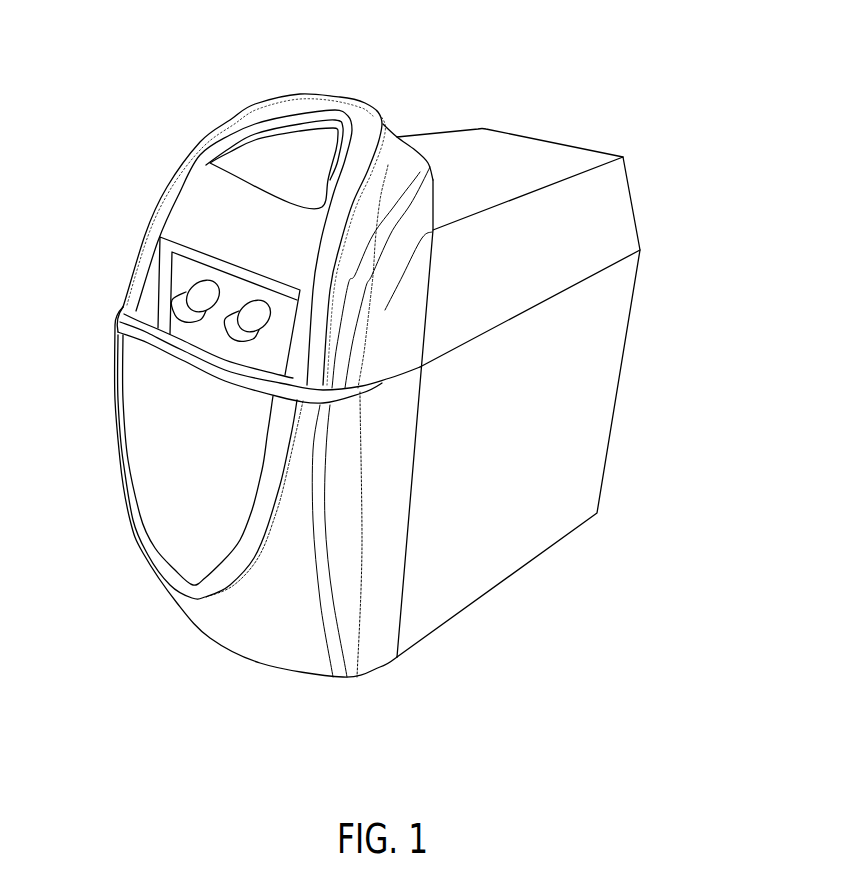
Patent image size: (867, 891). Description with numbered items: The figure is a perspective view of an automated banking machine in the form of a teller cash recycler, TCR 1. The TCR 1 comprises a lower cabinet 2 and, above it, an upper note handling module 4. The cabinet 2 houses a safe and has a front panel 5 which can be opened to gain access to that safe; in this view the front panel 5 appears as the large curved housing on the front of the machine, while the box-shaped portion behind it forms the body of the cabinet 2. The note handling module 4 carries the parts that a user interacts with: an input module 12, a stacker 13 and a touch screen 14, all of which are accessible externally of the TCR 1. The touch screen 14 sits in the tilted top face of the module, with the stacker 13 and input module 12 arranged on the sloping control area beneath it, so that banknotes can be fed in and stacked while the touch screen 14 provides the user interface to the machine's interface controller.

The TCR 1 is at (676, 318).
The cabinet 2 is at (583, 493).
The note handling module 4 is at (517, 133).
The front panel 5 is at (210, 640).
The input module 12 is at (242, 160).
The stacker 13 is at (172, 283).
The touch screen 14 is at (307, 118).